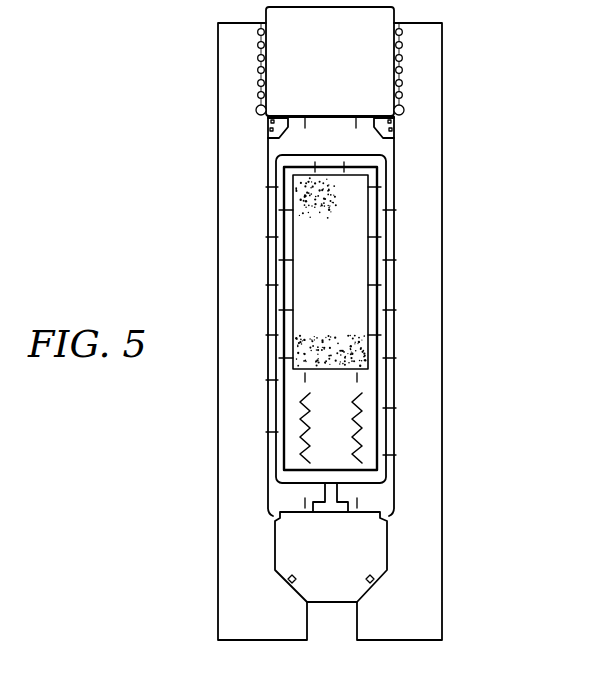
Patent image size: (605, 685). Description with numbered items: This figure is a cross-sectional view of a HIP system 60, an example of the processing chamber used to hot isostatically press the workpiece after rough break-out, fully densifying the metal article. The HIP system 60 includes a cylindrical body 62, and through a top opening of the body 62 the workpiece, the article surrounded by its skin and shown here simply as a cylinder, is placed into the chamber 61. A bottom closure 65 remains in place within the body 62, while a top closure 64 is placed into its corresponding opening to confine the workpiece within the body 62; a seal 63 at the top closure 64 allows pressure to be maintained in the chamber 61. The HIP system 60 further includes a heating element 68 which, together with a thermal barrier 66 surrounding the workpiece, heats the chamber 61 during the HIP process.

The HIP system 60 is at (128, 126).
The chamber 61 is at (292, 272).
The cylindrical body 62 is at (442, 251).
The seal 63 is at (393, 130).
The top closure 64 is at (343, 75).
The bottom closure 65 is at (345, 571).
The thermal barrier 66 is at (382, 347).
The heating element 68 is at (358, 440).